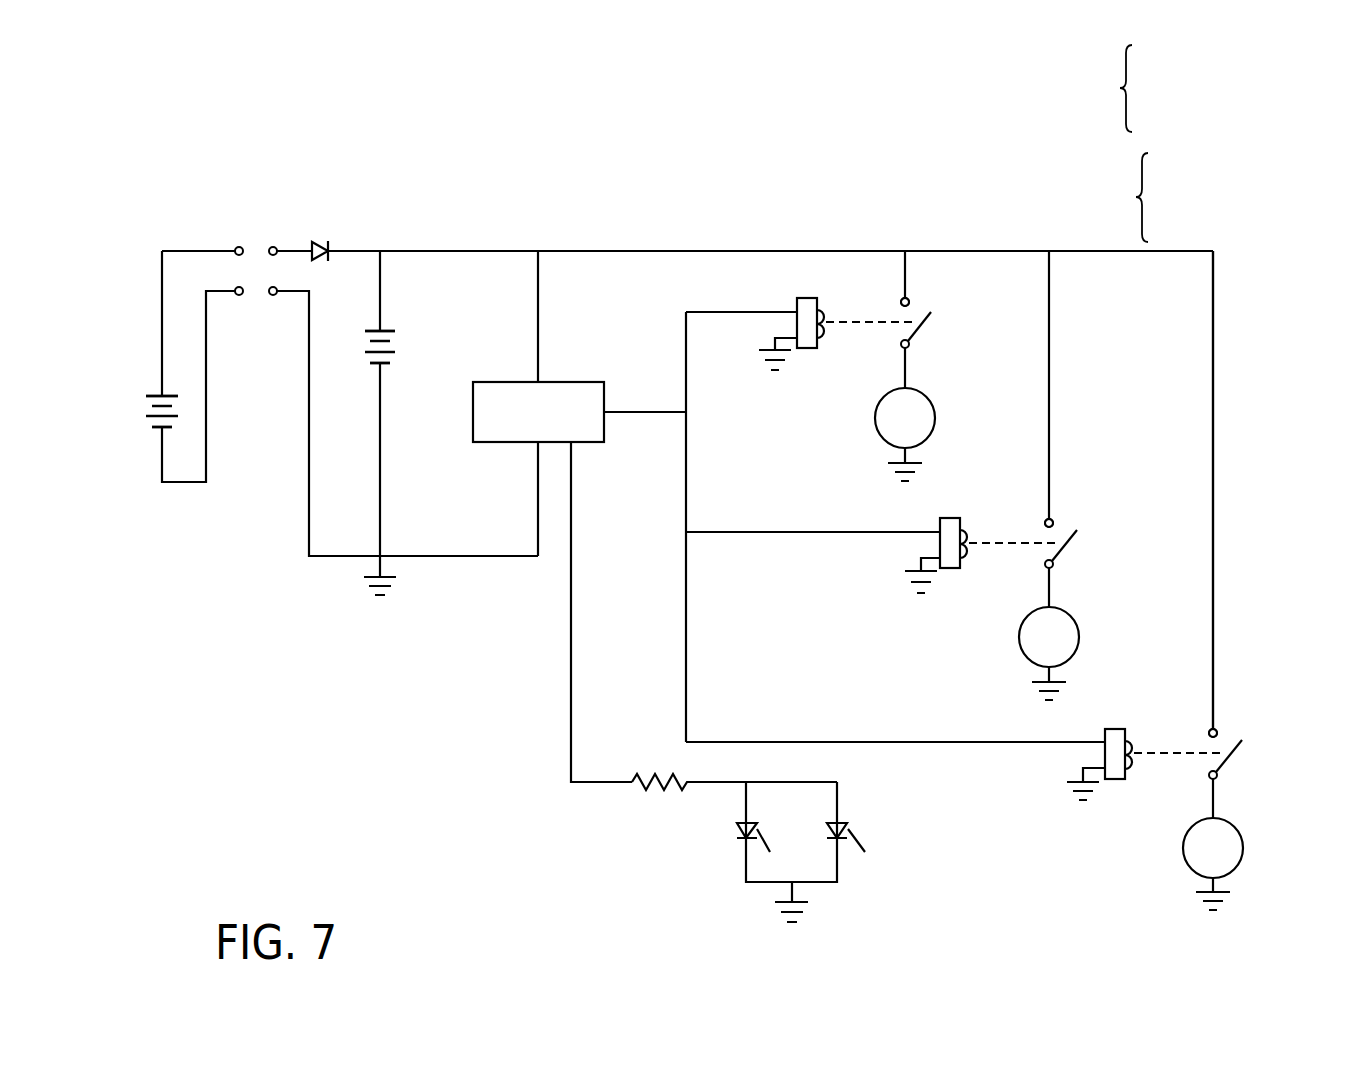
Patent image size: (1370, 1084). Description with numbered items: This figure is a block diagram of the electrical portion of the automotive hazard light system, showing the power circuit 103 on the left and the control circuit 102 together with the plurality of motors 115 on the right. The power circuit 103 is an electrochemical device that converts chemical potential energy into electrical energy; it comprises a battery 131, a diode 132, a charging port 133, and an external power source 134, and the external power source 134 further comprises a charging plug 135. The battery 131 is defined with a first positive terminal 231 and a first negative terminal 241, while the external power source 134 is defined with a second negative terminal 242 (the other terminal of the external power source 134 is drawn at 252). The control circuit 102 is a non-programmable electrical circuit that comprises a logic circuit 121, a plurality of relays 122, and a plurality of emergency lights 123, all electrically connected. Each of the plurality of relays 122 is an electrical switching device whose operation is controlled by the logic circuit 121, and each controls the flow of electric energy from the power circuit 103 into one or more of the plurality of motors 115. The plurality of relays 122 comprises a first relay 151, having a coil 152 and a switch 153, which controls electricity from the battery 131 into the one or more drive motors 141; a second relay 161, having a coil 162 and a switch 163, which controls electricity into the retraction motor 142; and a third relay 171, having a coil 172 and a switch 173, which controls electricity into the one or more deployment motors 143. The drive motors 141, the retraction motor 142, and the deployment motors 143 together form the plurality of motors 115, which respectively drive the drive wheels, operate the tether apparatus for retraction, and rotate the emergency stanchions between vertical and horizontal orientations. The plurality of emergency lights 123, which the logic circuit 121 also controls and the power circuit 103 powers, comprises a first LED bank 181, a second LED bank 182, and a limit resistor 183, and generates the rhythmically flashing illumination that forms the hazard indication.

The control circuit 102 is at (1228, 410).
The power circuit 103 is at (127, 183).
The plurality of motors 115 is at (1141, 198).
The logic circuit 121 is at (572, 381).
The plurality of relays 122 is at (1130, 88).
The plurality of emergency lights 123 is at (674, 809).
The battery 131 is at (395, 348).
The diode 132 is at (318, 241).
The charging port 133 is at (272, 246).
The external power source 134 is at (178, 410).
The charging plug 135 is at (236, 248).
The drive motors 141 is at (935, 398).
The retraction motor 142 is at (1078, 627).
The deployment motors 143 is at (1243, 848).
The first relay 151 is at (926, 322).
The first relay coil 152 is at (807, 298).
The first relay switch 153 is at (917, 306).
The second relay 161 is at (1070, 555).
The second relay coil 162 is at (950, 518).
The second relay switch 163 is at (1060, 528).
The third relay 171 is at (1232, 765).
The third relay coil 172 is at (1115, 729).
The third relay switch 173 is at (1230, 738).
The first LED bank 181 is at (735, 827).
The second LED bank 182 is at (845, 822).
The limit resistor 183 is at (657, 770).
The first positive terminal 231 is at (380, 330).
The first negative terminal 241 is at (380, 365).
The second negative terminal 242 is at (165, 440).
The main battery positive terminal 252 is at (162, 396).